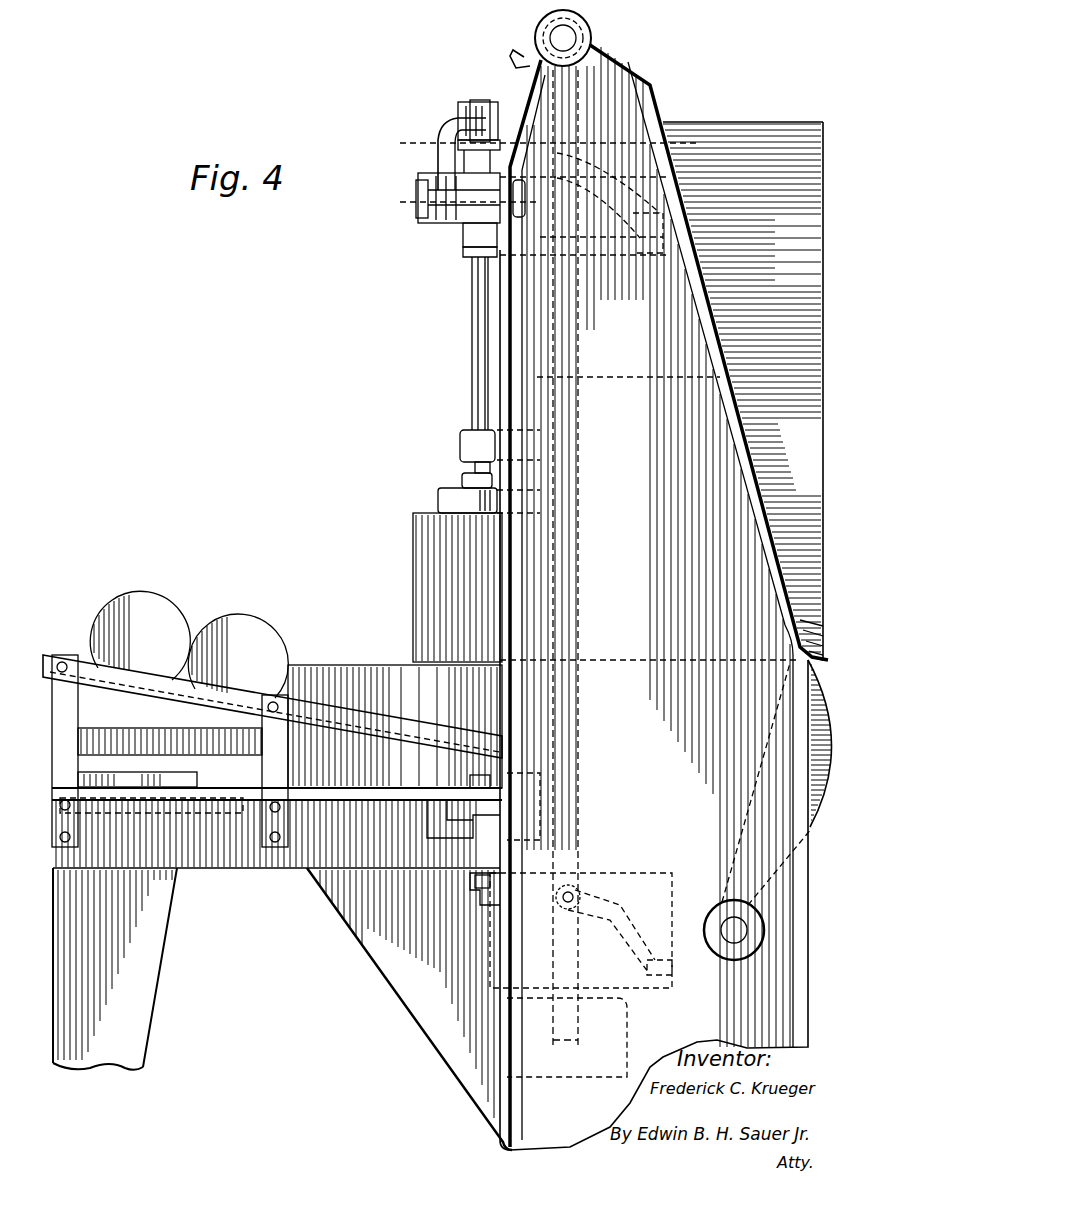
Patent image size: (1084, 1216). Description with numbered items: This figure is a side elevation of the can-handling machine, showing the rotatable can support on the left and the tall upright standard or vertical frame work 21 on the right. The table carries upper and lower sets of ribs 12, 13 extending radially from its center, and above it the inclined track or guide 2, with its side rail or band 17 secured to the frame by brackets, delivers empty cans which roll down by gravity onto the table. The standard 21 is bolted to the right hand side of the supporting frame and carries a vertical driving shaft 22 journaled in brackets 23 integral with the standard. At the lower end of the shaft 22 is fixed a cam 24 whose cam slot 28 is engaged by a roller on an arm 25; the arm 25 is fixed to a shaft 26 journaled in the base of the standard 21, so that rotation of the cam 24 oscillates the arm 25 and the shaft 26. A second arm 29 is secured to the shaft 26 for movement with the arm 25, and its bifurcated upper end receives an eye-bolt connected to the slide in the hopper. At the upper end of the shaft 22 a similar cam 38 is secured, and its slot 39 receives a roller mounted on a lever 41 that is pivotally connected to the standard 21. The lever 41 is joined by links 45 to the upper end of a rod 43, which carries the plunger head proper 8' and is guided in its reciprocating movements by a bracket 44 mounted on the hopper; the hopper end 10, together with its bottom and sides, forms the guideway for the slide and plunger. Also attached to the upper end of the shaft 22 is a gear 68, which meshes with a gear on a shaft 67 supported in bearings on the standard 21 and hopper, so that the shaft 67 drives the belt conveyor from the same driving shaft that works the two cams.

The track or guide 2 is at (88, 692).
The plunger head 8' is at (450, 493).
The hopper end 10 is at (414, 585).
The upper set of ribs 12 is at (198, 778).
The lower set of ribs 13 is at (168, 818).
The side rail or band 17 is at (190, 705).
The standard or vertical frame work 21 is at (685, 288).
The driving shaft 22 is at (573, 548).
The brackets 23 is at (628, 1023).
The cam 24 is at (462, 992).
The arm 25 is at (688, 900).
The shaft 26 is at (734, 940).
The cam slot 28 is at (668, 966).
The arm 29 is at (740, 857).
The cam 38 is at (652, 165).
The slot 39 is at (663, 238).
The lever 41 is at (440, 144).
The rod 43 is at (472, 328).
The bracket 44 is at (461, 449).
The links 45 is at (488, 103).
The shaft 67 is at (566, 35).
The gear 68 is at (518, 56).